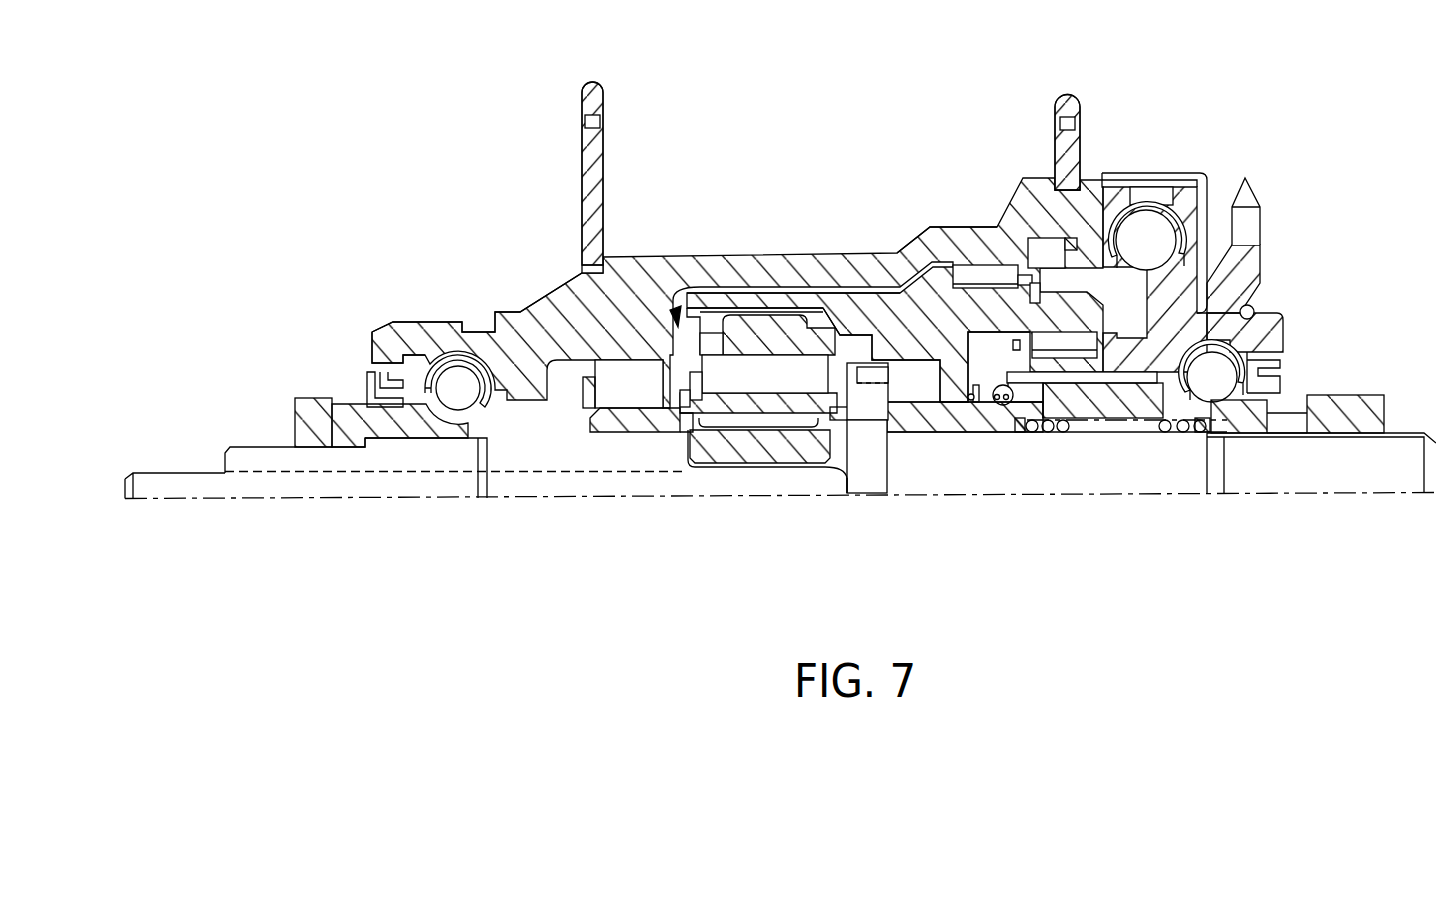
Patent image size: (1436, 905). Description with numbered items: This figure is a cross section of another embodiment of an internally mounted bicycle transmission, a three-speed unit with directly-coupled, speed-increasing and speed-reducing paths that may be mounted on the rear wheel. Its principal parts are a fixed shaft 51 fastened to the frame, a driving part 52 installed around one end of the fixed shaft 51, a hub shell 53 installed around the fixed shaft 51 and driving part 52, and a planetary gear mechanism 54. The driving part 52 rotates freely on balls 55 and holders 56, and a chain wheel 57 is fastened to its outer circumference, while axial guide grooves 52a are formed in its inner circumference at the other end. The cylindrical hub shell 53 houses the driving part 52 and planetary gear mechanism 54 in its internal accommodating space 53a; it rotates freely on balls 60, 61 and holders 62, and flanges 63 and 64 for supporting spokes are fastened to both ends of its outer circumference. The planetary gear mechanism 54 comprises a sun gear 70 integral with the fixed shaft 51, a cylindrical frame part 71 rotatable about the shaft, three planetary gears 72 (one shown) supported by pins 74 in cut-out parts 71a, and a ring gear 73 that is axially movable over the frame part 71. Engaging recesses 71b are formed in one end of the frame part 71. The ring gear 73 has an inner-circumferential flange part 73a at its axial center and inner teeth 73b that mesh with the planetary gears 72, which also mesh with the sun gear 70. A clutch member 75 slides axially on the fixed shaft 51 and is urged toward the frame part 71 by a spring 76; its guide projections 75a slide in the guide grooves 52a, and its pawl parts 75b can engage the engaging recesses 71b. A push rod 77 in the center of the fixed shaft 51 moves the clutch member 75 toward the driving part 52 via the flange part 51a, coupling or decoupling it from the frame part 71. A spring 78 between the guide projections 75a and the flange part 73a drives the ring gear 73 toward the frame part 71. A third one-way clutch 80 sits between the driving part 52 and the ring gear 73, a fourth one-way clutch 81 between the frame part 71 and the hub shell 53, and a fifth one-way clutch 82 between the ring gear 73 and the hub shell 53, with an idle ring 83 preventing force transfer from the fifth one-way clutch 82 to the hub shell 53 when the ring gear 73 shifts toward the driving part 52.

The fixed shaft 51 is at (1312, 477).
The flange part 51a is at (877, 483).
The driving part 52 is at (1275, 325).
The guide grooves 52a is at (1118, 383).
The hub shell 53 is at (810, 265).
The internal accommodating space 53a is at (942, 271).
The planetary gear mechanism 54 is at (623, 377).
The balls 55 is at (1185, 390).
The holders 56 is at (1273, 390).
The chain wheel 57 is at (1250, 210).
The balls 60 is at (1135, 235).
The balls 61 is at (468, 382).
The holders 62 is at (347, 413).
The flange 63 is at (592, 87).
The flange 64 is at (1068, 108).
The sun gear 70 is at (687, 460).
The frame part 71 is at (583, 425).
The cut-out parts 71a is at (735, 370).
The engaging recesses 71b is at (875, 470).
The planetary gears 72 is at (778, 400).
The ring gear 73 is at (873, 295).
The inner-circumferential flange part 73a is at (953, 380).
The inner teeth 73b is at (702, 320).
The pins 74 is at (817, 380).
The clutch member 75 is at (965, 380).
The guide projections 75a is at (1037, 402).
The pawl parts 75b is at (880, 378).
The spring 76 is at (1185, 433).
The push rod 77 is at (190, 479).
The spring 78 is at (1003, 406).
The third one-way clutch 80 is at (1065, 340).
The fourth one-way clutch 81 is at (548, 295).
The fifth one-way clutch 82 is at (1003, 268).
The idle ring 83 is at (1048, 250).